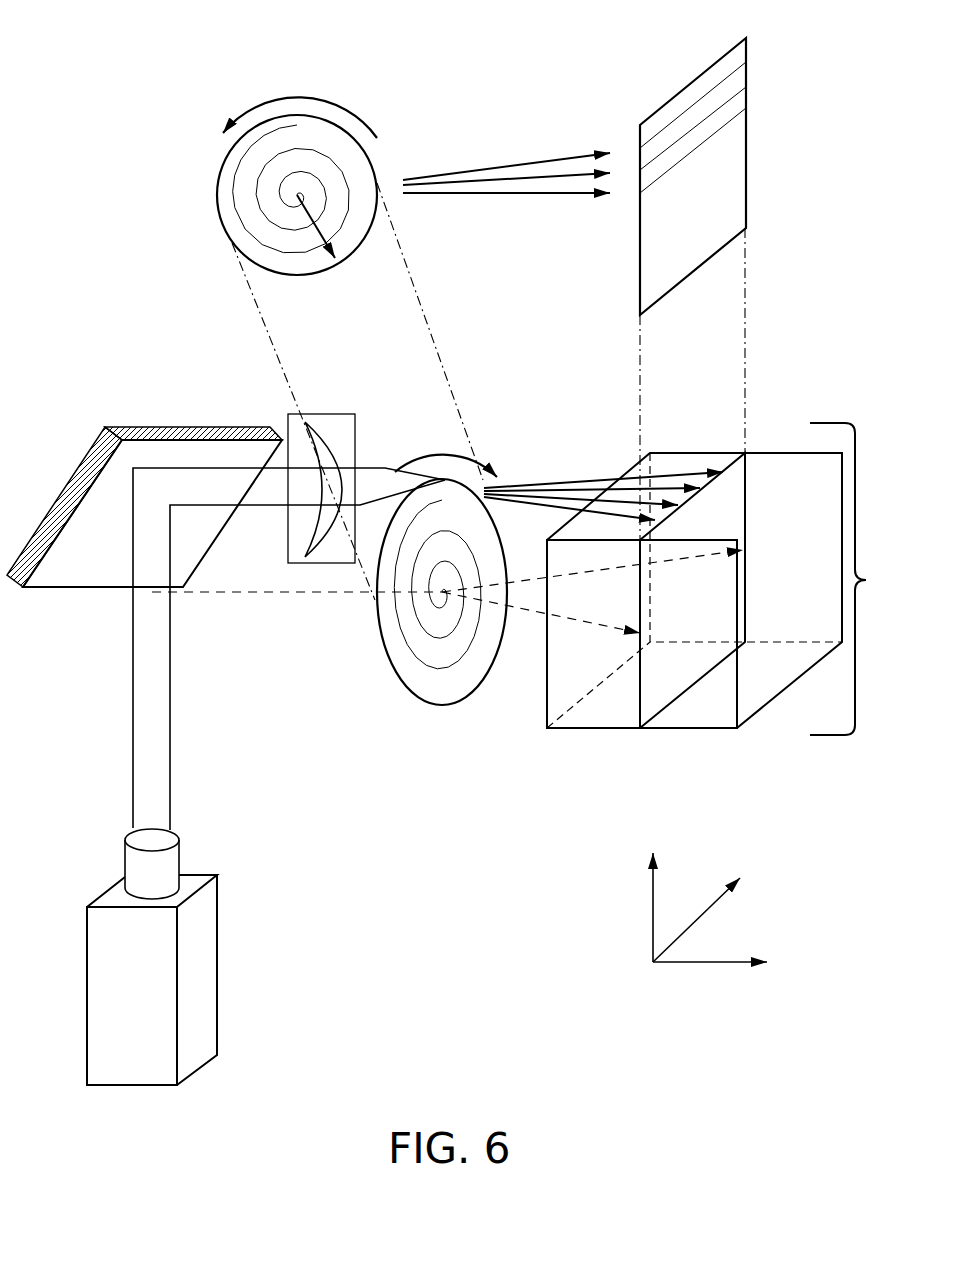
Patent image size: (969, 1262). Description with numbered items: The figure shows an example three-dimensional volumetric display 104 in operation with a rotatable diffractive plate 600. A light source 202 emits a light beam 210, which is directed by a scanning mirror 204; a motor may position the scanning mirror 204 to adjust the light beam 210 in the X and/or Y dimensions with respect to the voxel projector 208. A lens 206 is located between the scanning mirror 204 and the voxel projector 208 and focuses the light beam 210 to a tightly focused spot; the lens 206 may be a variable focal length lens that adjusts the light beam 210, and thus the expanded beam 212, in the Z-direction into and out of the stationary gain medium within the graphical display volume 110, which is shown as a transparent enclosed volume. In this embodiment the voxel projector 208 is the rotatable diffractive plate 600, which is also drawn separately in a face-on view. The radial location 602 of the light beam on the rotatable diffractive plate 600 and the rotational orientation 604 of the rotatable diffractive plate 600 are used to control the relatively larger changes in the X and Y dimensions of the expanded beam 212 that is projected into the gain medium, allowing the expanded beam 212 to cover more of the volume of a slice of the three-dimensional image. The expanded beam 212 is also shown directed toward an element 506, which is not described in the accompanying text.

The 3D volumetric display 104 is at (517, 883).
The graphical display volume 110 is at (868, 580).
The light source 202 is at (217, 928).
The scanning mirror 204 is at (173, 427).
The lens 206 is at (310, 563).
The voxel projector 208 is at (418, 700).
The light beam 210 is at (170, 720).
The expanded beam 212 is at (507, 165).
The screen 506 is at (747, 143).
The rotatable diffractive plate 600 is at (220, 183).
The radial location 602 is at (300, 215).
The rotational orientation 604 is at (300, 98).